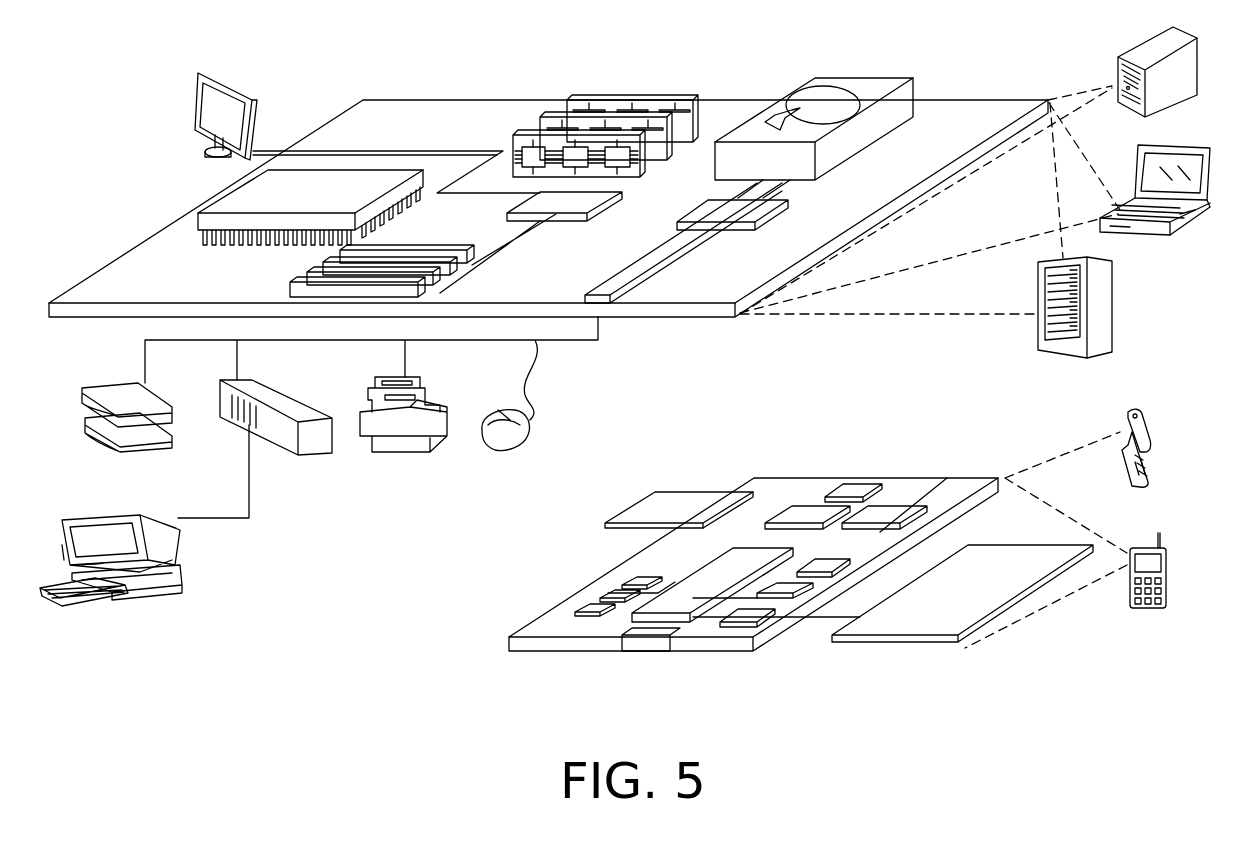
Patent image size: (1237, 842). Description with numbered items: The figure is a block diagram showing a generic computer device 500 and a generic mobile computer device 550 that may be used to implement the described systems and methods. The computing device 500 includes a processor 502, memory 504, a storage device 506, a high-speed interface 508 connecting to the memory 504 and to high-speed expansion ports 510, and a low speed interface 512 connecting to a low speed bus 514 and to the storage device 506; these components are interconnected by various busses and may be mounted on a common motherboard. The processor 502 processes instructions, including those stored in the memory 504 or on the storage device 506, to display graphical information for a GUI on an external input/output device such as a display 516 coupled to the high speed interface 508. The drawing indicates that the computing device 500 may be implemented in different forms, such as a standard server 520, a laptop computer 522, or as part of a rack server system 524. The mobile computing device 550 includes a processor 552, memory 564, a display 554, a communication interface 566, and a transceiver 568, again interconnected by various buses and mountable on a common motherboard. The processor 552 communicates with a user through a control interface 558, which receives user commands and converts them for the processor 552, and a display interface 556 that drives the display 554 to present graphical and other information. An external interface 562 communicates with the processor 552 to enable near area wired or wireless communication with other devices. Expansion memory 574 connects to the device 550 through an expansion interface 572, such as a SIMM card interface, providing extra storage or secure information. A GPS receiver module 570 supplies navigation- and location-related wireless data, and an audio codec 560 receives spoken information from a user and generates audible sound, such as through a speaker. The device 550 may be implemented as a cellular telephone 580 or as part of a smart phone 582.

The computing device 500 is at (322, 53).
The processor 502 is at (220, 195).
The memory 504 is at (638, 93).
The storage device 506 is at (854, 78).
The high-speed interface 508 is at (577, 200).
The high-speed expansion ports 510 is at (313, 270).
The low speed interface 512 is at (710, 205).
The low speed bus 514 is at (603, 290).
The display 516 is at (200, 73).
The standard server 520 is at (1137, 50).
The laptop computer 522 is at (1188, 143).
The rack server system 524 is at (1113, 304).
The mobile computer device 550 is at (472, 656).
The processor 552 is at (683, 590).
The display 554 is at (998, 557).
The display interface 556 is at (760, 612).
The control interface 558 is at (790, 587).
The audio codec 560 is at (827, 556).
The external interface 562 is at (647, 637).
The memory 564 is at (600, 597).
The communication interface 566 is at (807, 508).
The transceiver 568 is at (892, 508).
The GPS receiver module 570 is at (855, 487).
The expansion interface 572 is at (737, 490).
The expansion memory 574 is at (660, 490).
The cellular telephone 580 is at (1133, 410).
The smart phone 582 is at (1143, 547).